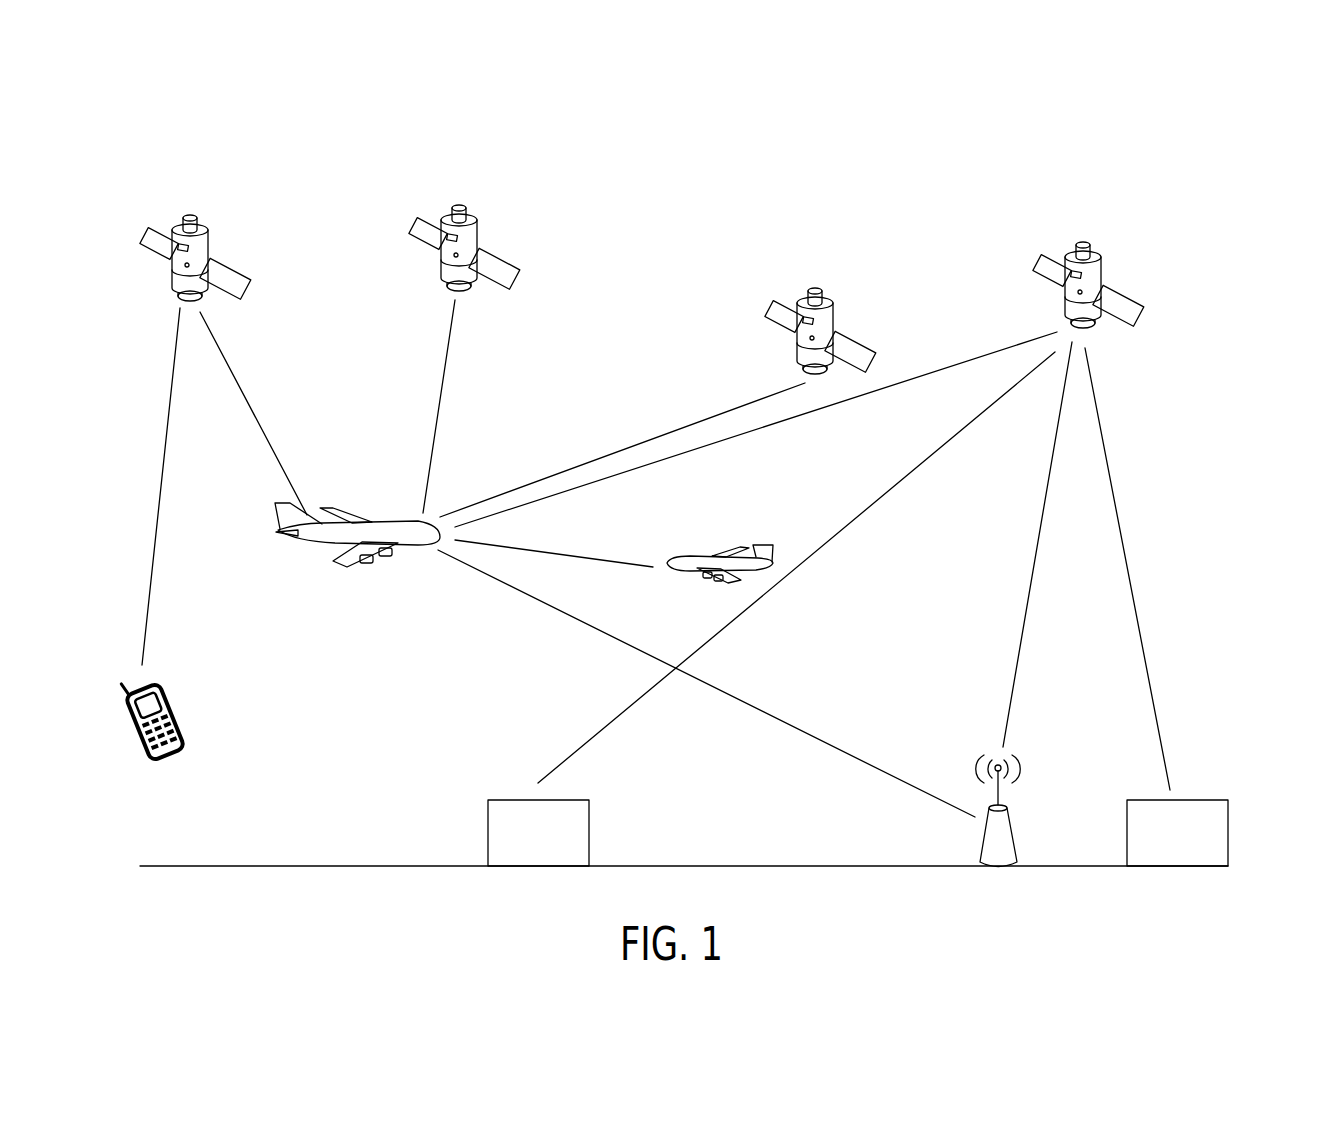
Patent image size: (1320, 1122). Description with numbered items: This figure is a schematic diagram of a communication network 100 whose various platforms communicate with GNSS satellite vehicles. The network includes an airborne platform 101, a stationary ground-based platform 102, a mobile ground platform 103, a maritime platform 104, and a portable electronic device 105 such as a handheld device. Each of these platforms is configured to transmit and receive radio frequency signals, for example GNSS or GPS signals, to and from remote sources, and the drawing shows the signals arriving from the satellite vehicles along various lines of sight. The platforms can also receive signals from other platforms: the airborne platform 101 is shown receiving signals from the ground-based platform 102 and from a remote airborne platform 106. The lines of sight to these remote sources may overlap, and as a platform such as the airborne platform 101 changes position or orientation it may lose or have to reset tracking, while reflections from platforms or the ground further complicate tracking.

The communication network 100 is at (272, 110).
The airborne platform 101 is at (314, 571).
The ground-based platform 102 is at (1024, 825).
The mobile ground platform 103 is at (464, 832).
The maritime platform 104 is at (1206, 783).
The portable electronic device 105 is at (192, 694).
The remote airborne platform 106 is at (699, 540).